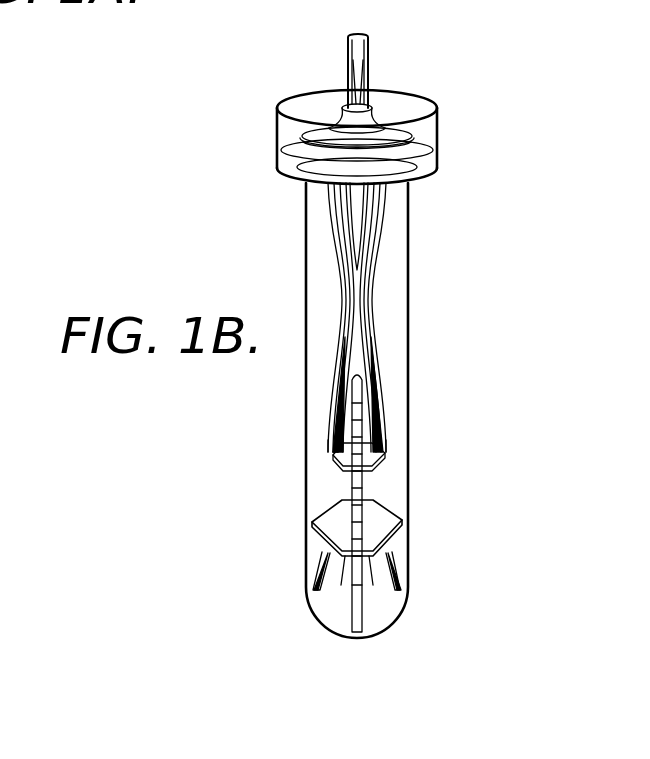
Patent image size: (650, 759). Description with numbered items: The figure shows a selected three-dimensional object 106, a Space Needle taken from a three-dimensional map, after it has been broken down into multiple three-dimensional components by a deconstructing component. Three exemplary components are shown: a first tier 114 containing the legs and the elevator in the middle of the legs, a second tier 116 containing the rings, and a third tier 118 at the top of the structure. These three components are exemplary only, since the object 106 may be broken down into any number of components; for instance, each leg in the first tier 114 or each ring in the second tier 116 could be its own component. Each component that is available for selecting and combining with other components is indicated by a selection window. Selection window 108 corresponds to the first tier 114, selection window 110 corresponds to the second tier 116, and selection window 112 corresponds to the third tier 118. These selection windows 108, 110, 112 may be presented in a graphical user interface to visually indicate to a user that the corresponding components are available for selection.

The 3D object 106 is at (256, 137).
The selection window 108 is at (408, 292).
The selection window 110 is at (442, 143).
The selection window 112 is at (370, 50).
The first tier 114 is at (393, 371).
The second tier 116 is at (403, 86).
The third tier 118 is at (340, 50).